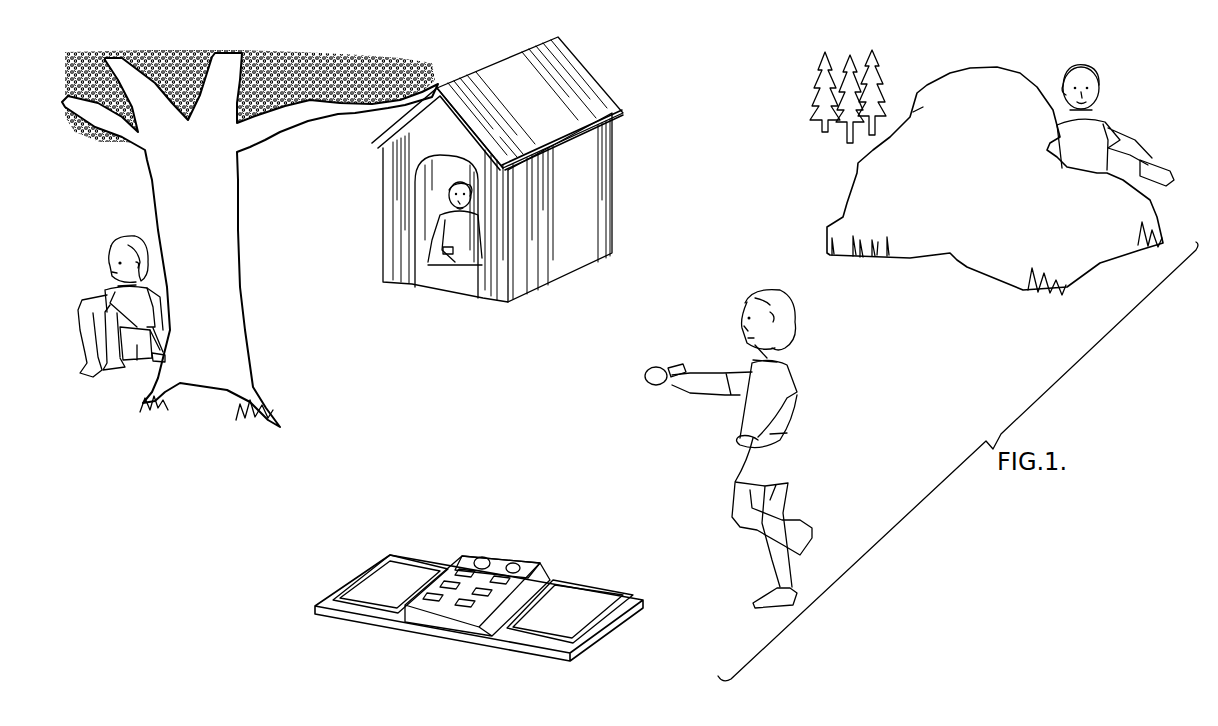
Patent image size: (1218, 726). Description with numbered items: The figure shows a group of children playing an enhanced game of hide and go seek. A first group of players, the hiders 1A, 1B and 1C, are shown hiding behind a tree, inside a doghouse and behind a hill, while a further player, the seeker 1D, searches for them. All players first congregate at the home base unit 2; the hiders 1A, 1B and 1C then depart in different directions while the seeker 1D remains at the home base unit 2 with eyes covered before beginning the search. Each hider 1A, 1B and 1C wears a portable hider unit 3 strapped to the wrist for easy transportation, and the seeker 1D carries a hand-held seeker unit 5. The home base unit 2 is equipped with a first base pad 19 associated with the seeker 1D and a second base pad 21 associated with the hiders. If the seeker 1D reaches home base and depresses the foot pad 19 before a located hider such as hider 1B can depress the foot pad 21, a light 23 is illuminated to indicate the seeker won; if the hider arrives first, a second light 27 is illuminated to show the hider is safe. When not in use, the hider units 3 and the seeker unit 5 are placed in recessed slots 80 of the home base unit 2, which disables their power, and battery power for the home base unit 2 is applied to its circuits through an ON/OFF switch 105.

The hider 1A is at (119, 226).
The hider 1B is at (458, 277).
The hider 1C is at (1122, 98).
The seeker 1D is at (828, 347).
The home base unit 2 is at (512, 642).
The hider unit 3 is at (150, 368).
The seeker unit 5 is at (677, 362).
The first base pad 19 is at (383, 580).
The second base pad 21 is at (598, 603).
The light 23 is at (483, 557).
The second light 27 is at (517, 566).
The slots 80 is at (498, 582).
The ON/OFF switch 105 is at (505, 560).